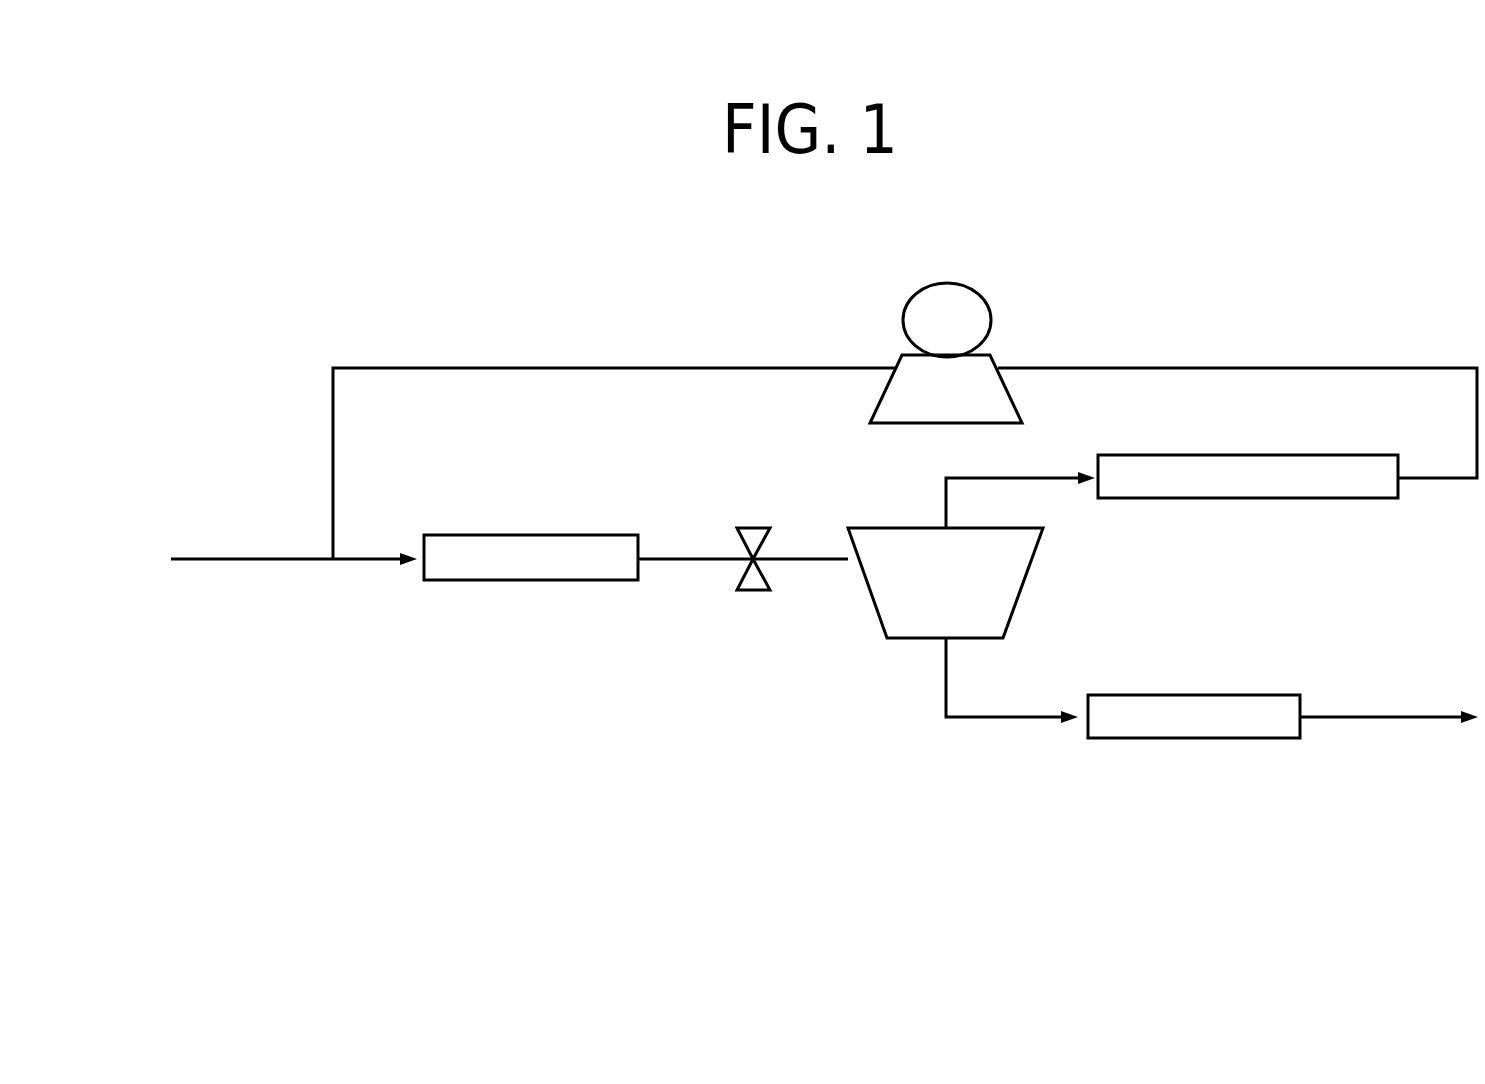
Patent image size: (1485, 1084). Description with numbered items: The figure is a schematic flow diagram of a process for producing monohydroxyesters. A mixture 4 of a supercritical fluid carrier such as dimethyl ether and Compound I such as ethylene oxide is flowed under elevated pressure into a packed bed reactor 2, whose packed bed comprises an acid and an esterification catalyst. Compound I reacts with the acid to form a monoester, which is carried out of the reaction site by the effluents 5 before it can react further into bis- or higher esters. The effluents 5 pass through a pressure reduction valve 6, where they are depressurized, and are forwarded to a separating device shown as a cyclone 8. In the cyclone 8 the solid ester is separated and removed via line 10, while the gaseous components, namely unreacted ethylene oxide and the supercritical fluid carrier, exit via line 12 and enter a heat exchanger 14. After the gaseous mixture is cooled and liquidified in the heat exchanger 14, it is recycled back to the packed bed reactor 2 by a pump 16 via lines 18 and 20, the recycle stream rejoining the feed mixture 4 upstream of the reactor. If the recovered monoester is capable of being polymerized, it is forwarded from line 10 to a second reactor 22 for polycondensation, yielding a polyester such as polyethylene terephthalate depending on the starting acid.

The packed bed reactor 2 is at (487, 578).
The mixture 4 is at (245, 559).
The effluents 5 is at (708, 560).
The pressure reduction valve 6 is at (755, 590).
The cyclone 8 is at (882, 628).
The line 10 is at (946, 712).
The line 12 is at (948, 502).
The heat exchanger 14 is at (1365, 500).
The pump 16 is at (922, 326).
The line 18 is at (1280, 367).
The line 20 is at (615, 368).
The second reactor 22 is at (1257, 738).